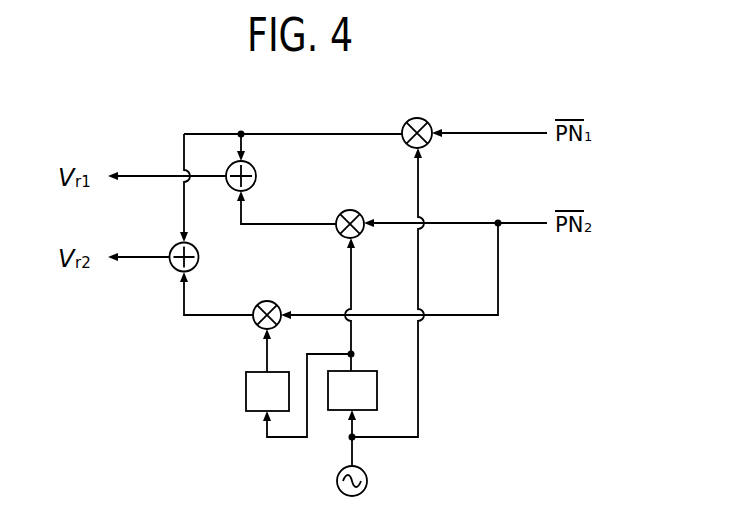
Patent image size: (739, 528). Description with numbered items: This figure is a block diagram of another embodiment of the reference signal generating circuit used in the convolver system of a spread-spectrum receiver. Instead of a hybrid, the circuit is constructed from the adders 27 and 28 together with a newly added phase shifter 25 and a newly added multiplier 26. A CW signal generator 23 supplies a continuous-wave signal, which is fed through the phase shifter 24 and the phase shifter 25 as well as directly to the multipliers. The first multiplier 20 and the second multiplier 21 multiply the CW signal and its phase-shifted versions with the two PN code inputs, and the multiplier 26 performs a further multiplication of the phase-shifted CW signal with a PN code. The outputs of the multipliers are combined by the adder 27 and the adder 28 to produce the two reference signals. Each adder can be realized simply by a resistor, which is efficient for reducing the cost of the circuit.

The first multiplier 20 is at (420, 118).
The second multiplier 21 is at (360, 213).
The CW signal generator 23 is at (364, 471).
The phase shifter 24 is at (377, 389).
The phase shifter 25 is at (246, 394).
The multiplier 26 is at (277, 304).
The adder 27 is at (263, 163).
The adder 28 is at (198, 261).